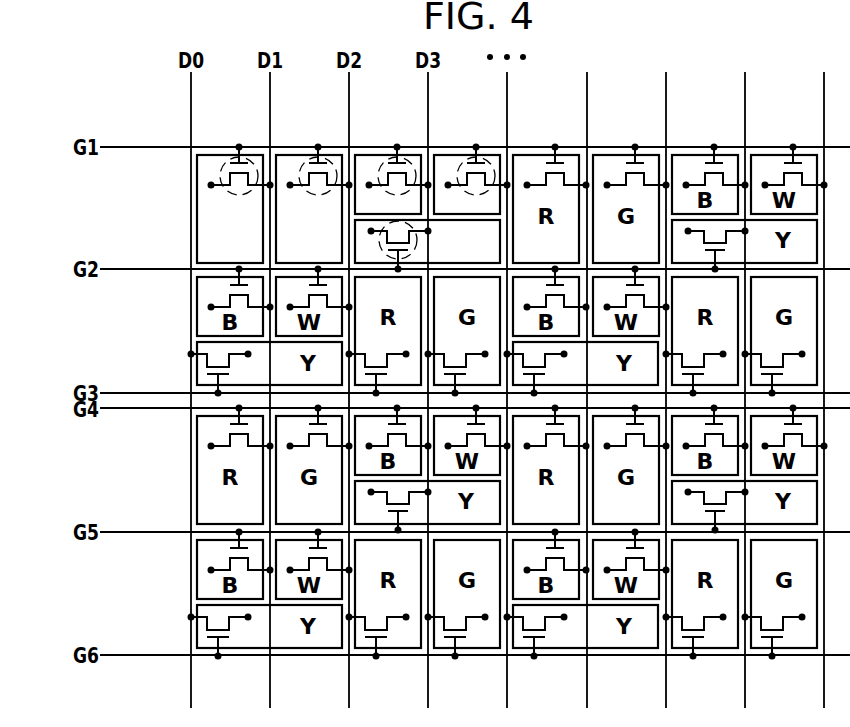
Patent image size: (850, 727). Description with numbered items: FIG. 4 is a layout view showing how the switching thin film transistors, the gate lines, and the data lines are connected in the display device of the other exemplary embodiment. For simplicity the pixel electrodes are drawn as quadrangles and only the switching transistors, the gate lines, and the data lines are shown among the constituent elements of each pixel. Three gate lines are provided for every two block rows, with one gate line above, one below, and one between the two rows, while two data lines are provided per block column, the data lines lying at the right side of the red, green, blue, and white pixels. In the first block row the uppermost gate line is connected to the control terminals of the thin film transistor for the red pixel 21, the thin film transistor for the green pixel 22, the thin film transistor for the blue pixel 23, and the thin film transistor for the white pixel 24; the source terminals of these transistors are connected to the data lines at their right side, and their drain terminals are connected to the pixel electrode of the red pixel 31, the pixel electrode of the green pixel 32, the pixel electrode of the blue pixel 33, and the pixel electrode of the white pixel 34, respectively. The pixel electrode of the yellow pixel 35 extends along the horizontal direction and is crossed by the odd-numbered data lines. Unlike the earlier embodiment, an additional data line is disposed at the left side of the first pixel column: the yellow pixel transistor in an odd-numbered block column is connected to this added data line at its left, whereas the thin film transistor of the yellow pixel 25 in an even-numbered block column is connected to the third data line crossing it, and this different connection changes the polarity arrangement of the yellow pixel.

The thin film transistor for the red pixel 21 is at (221, 154).
The thin film transistor for the green pixel 22 is at (301, 154).
The thin film transistor for the blue pixel 23 is at (379, 154).
The thin film transistor for the white pixel 24 is at (460, 155).
The thin film transistor of the yellow pixel 25 is at (375, 231).
The pixel electrode of the red pixel 31 is at (249, 157).
The pixel electrode of the green pixel 32 is at (327, 157).
The pixel electrode of the blue pixel 33 is at (405, 157).
The pixel electrode of the white pixel 34 is at (488, 159).
The pixel electrode of the yellow pixel 35 is at (499, 241).